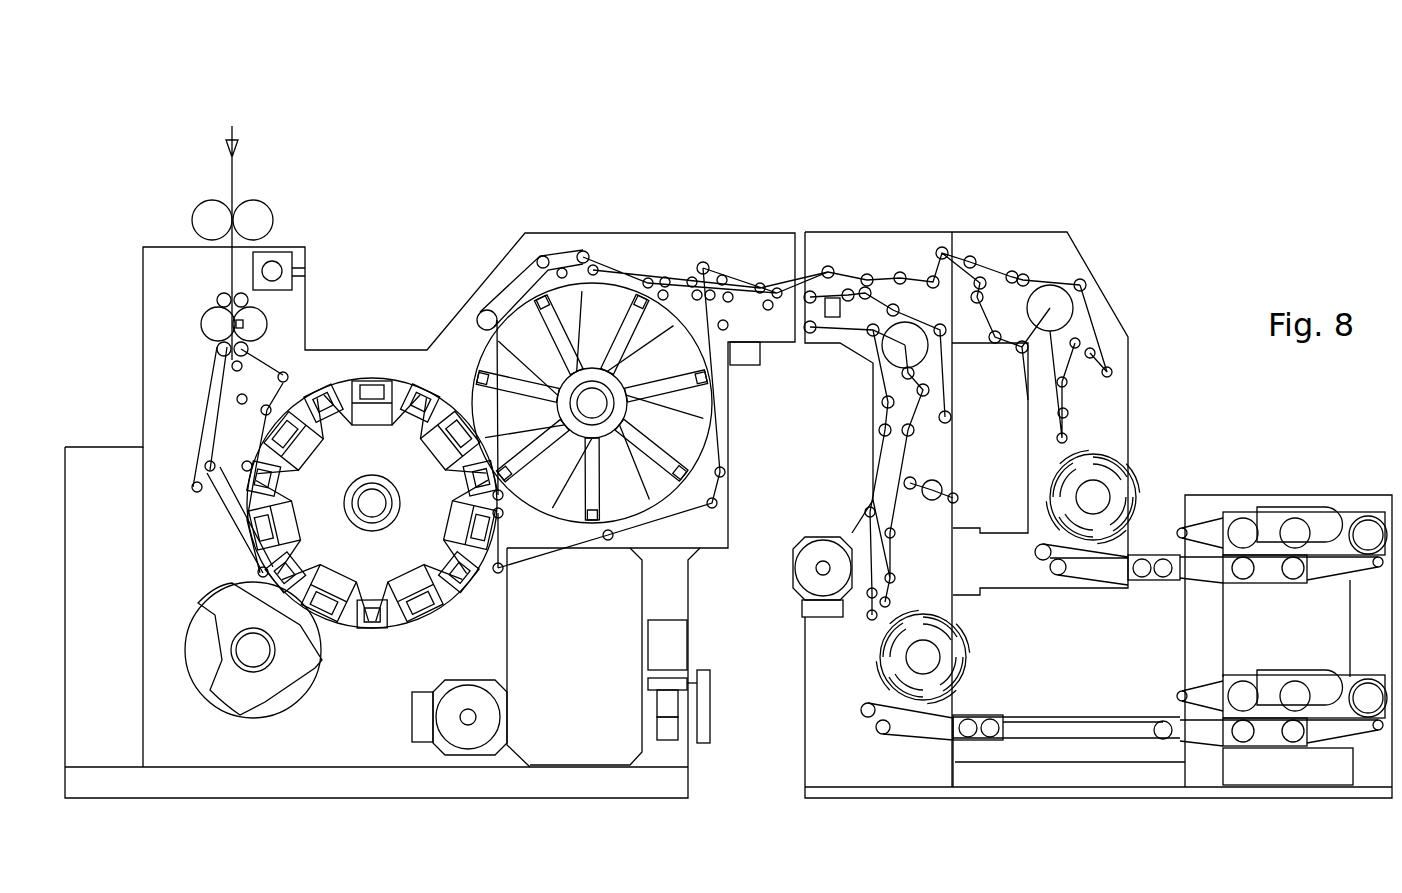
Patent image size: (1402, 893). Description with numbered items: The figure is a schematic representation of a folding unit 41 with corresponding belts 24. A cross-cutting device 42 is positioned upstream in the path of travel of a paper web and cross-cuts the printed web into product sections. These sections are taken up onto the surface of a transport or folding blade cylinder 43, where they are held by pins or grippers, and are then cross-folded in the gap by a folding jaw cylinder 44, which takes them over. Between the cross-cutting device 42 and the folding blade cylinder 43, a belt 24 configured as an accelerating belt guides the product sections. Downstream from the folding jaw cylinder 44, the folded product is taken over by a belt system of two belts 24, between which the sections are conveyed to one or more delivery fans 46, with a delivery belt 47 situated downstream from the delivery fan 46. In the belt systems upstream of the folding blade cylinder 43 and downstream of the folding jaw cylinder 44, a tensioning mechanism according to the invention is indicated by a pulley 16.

The folding unit 41 is at (694, 64).
The cross-cutting device 42 is at (205, 322).
The belt 24 is at (205, 405).
The pulley 16 is at (210, 470).
The folding blade cylinder 43 is at (480, 573).
The folding jaw cylinder 44 is at (688, 430).
The delivery fan 46 is at (1130, 472).
The delivery belt 47 is at (1078, 738).